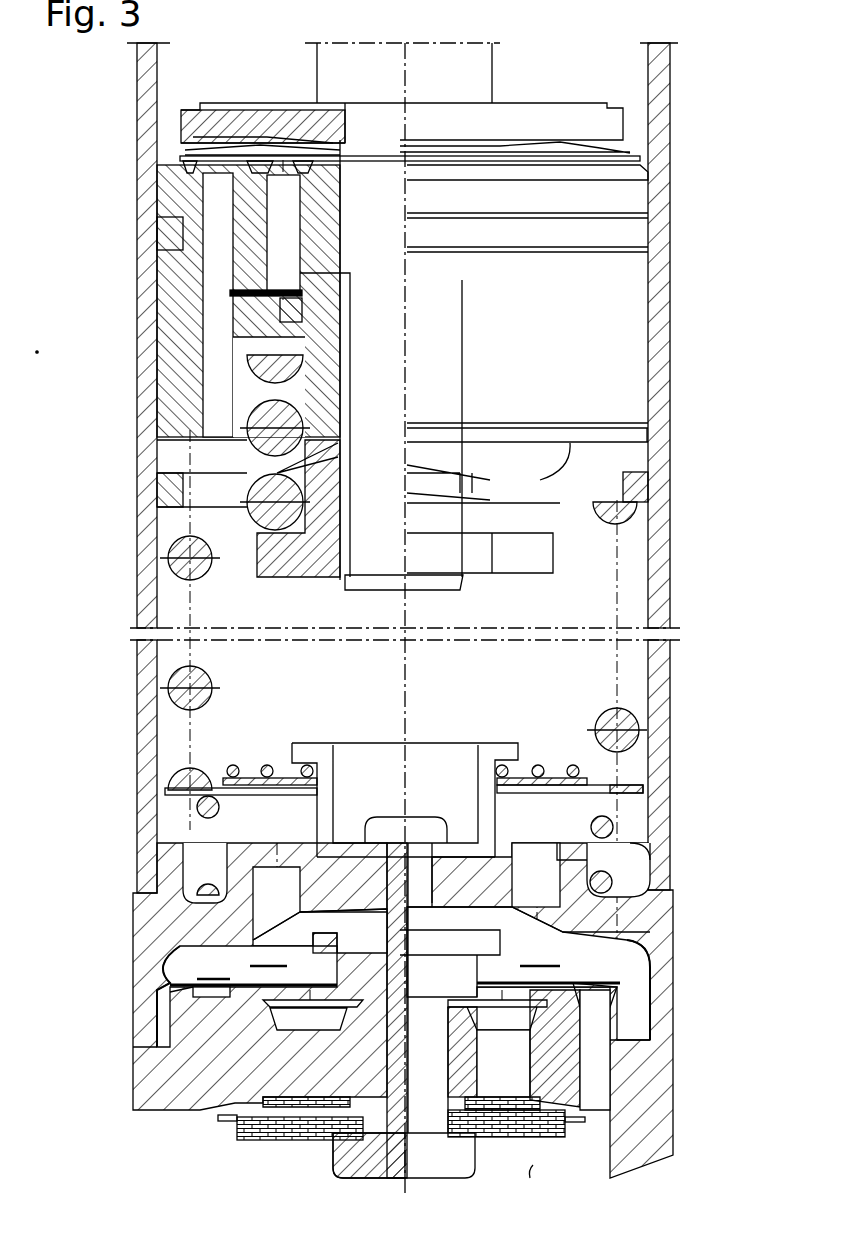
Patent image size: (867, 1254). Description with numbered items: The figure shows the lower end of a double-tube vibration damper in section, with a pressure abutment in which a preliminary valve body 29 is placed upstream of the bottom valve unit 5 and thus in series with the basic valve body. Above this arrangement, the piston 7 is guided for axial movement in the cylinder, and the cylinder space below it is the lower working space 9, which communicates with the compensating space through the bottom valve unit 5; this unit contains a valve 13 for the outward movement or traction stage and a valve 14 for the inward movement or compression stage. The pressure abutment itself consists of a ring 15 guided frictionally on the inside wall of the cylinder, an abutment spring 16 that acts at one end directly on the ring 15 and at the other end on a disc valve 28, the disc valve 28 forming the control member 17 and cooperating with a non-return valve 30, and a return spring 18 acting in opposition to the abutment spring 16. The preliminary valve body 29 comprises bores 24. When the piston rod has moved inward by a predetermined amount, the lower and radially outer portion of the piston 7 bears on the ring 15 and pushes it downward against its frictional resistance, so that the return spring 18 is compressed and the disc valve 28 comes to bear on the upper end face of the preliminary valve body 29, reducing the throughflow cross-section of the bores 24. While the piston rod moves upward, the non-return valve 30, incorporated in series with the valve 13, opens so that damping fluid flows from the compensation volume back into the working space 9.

The bottom valve unit 5 is at (657, 1077).
The piston 7 is at (175, 297).
The lower working space 9 is at (472, 707).
The valve 13 is at (180, 972).
The valve 14 is at (227, 1142).
The ring 15 is at (638, 482).
The abutment spring 16 is at (645, 722).
The control member 17 is at (632, 806).
The return spring 18 is at (640, 858).
The bores 24 is at (560, 920).
The disc valve 28 is at (645, 788).
The preliminary valve body 29 is at (660, 962).
The non-return valve 30 is at (660, 762).